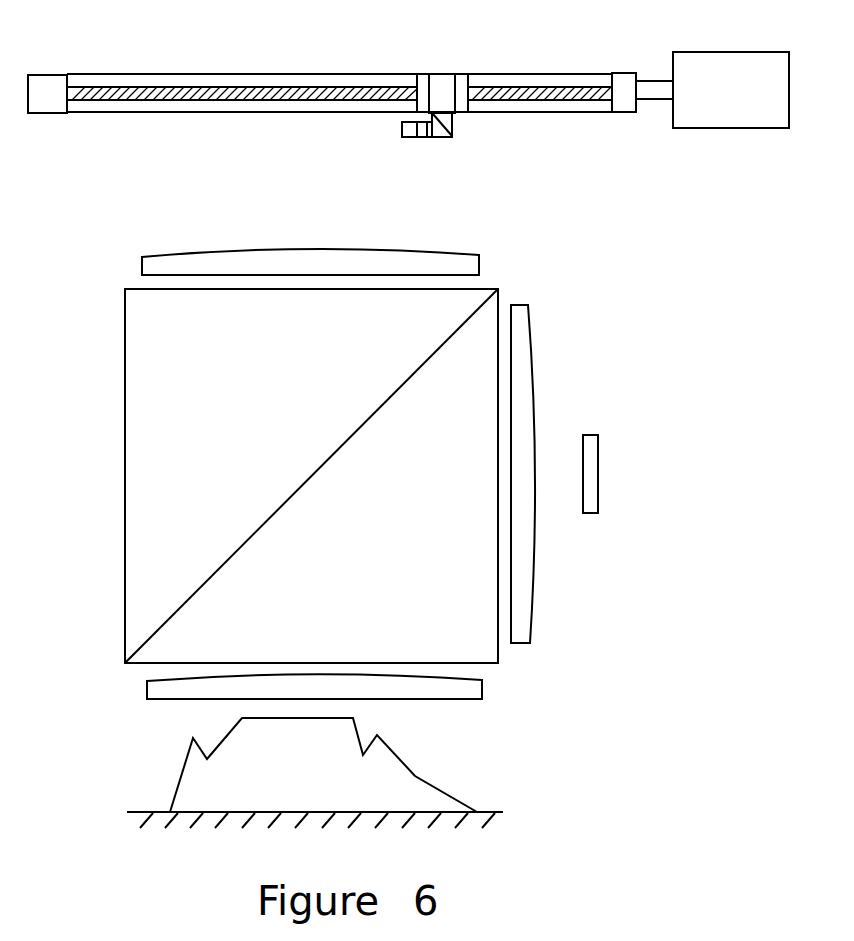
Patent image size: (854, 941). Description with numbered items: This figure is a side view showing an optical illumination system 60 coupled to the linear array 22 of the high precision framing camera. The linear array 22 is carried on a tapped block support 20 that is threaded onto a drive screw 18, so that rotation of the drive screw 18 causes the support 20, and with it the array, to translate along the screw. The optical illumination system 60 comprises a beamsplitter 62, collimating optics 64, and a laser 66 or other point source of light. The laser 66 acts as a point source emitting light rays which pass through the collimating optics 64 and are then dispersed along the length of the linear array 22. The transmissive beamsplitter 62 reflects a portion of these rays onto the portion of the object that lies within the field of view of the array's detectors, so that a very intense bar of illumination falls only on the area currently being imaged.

The drive screw 18 is at (276, 95).
The tapped block support 20 is at (445, 78).
The linear array 22 is at (453, 114).
The optical illumination system 60 is at (447, 137).
The beamsplitter 62 is at (453, 129).
The collimating optics 64 is at (420, 138).
The laser 66 is at (416, 128).